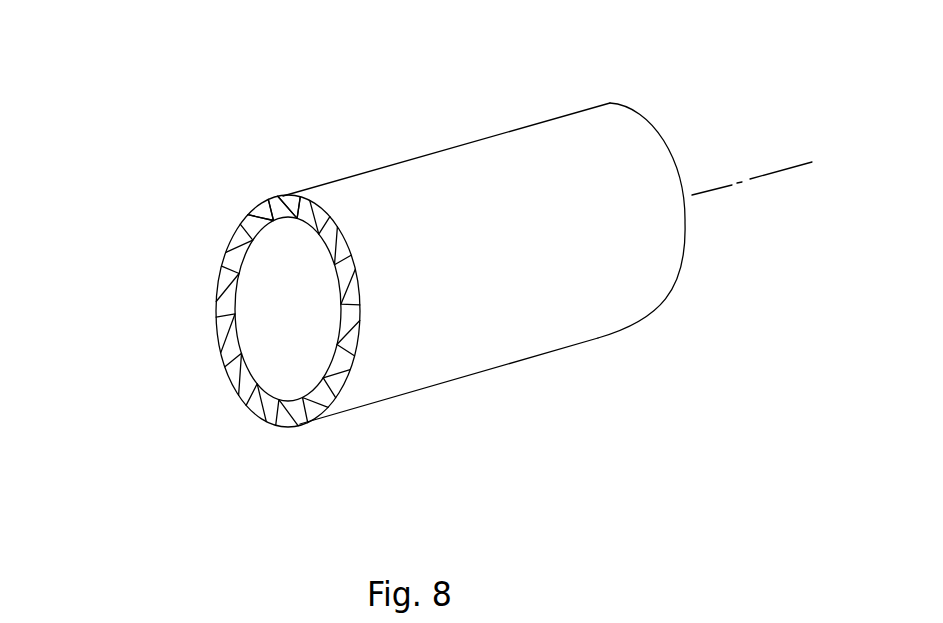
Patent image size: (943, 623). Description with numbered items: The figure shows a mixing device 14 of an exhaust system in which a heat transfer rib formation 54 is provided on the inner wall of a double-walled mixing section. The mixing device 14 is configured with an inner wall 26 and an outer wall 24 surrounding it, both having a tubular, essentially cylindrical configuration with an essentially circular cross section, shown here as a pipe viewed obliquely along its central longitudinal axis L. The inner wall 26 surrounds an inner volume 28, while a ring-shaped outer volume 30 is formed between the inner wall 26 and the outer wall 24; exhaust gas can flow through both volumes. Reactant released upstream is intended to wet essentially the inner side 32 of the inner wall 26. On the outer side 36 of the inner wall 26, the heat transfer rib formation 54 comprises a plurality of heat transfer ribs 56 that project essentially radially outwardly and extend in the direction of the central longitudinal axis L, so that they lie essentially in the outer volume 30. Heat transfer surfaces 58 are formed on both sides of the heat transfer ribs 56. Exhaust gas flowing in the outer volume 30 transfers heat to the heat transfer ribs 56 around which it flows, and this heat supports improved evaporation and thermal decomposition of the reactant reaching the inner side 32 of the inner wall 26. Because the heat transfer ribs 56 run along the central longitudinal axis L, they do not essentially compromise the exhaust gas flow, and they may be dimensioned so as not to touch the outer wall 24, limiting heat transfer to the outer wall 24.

The mixing device 14 is at (484, 219).
The outer wall 24 is at (475, 389).
The inner wall 26 is at (165, 326).
The inner volume 28 is at (189, 359).
The outer volume 30 is at (223, 309).
The inner side 32 is at (207, 415).
The outer side 36 is at (328, 162).
The heat transfer rib formation 54 is at (356, 341).
The heat transfer ribs 56 is at (239, 166).
The heat transfer surfaces 58 is at (244, 337).
The central longitudinal axis L is at (754, 197).